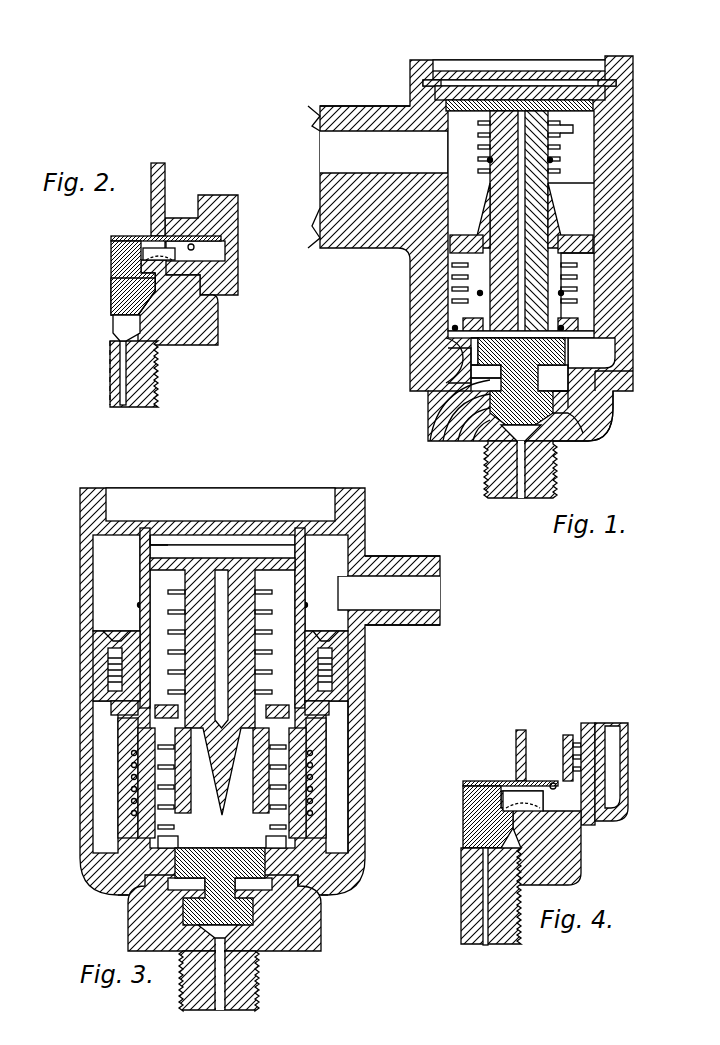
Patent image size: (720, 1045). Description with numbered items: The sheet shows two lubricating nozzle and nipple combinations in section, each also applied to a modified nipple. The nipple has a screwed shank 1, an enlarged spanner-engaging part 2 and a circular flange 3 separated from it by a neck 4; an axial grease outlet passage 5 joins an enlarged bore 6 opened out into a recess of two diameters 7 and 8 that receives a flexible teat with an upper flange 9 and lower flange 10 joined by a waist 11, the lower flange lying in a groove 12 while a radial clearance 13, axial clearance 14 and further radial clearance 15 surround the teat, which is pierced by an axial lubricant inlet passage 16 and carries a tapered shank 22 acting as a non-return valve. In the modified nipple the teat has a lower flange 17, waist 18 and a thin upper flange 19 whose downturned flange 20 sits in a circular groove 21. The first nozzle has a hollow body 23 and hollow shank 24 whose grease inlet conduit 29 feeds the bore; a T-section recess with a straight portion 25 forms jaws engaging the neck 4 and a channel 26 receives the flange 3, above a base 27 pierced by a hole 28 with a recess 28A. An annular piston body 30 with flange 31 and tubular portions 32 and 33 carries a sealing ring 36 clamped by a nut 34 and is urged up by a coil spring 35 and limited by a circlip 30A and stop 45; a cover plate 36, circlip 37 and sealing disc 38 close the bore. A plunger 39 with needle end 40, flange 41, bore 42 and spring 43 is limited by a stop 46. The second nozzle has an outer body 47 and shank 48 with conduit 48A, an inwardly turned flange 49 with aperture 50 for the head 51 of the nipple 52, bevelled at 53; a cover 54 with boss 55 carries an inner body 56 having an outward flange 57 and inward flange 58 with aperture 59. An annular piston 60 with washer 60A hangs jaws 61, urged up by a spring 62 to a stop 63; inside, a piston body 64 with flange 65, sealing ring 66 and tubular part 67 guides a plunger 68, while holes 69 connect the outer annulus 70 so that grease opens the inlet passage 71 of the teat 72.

In FIG. 1, the shank 1 is at (540, 462).
In FIG. 1, the intermediate or spanner-engaging part 2 is at (540, 400).
In FIG. 1, the circular flange 3 is at (585, 357).
In FIG. 2, the circular flange 3 is at (207, 253).
In FIG. 4, the circular flange 3 is at (563, 790).
In FIG. 1, the neck 4 is at (590, 373).
In FIG. 1, the axial grease outlet passage 5 is at (514, 487).
In FIG. 1, the enlarged bore 6 is at (530, 412).
In FIG. 2, the enlarged bore 6 is at (140, 343).
In FIG. 1, the larger diameter recess part 7 is at (472, 338).
In FIG. 2, the larger diameter recess part 7 is at (183, 245).
In FIG. 1, the smaller diameter recess part 8 is at (470, 385).
In FIG. 1, the upper flange 9 is at (473, 347).
In FIG. 1, the lower flange 10 is at (548, 397).
In FIG. 1, the waist 11 is at (470, 376).
In FIG. 1, the groove 12 is at (473, 400).
In FIG. 1, the radial clearance 13 is at (570, 347).
In FIG. 1, the axial clearance 14 is at (480, 370).
In FIG. 1, the radial clearance 15 is at (553, 362).
In FIG. 1, the axial lubricant inlet passage 16 is at (553, 428).
In FIG. 2, the axial lubricant inlet passage 16 is at (115, 290).
In FIG. 2, the lower flange 17 is at (150, 283).
In FIG. 2, the waist 18 is at (117, 257).
In FIG. 2, the upper flange 19 is at (125, 228).
In FIG. 4, the upper flange 19 is at (503, 772).
In FIG. 2, the circumferential downwardly-turned flange 20 is at (182, 238).
In FIG. 4, the circumferential downwardly-turned flange 20 is at (542, 773).
In FIG. 2, the circular groove 21 is at (186, 240).
In FIG. 4, the circular groove 21 is at (548, 777).
In FIG. 1, the tapered shank 22 is at (507, 445).
In FIG. 2, the tapered shank 22 is at (107, 310).
In FIG. 1, the hollow body 23 is at (612, 257).
In FIG. 1, the hollow shank 24 is at (345, 110).
In FIG. 1, the lower straight parallel portion 25 is at (470, 365).
In FIG. 1, the channel 26 is at (463, 340).
In FIG. 1, the base 27 is at (447, 330).
In FIG. 1, the hole 28 is at (447, 320).
In FIG. 1, the recess 28A is at (565, 320).
In FIG. 1, the grease inlet conduit 29 is at (340, 151).
In FIG. 1, the central metal body 30 is at (553, 233).
In FIG. 1, the circlip 30A is at (418, 347).
In FIG. 1, the flange 31 is at (556, 263).
In FIG. 1, the upper tubular portion 32 is at (542, 183).
In FIG. 1, the lower tubular portion 33 is at (470, 275).
In FIG. 1, the nut 34 is at (463, 215).
In FIG. 1, the coil spring 35 is at (553, 285).
In FIG. 1, the flexible sealing ring 36 is at (513, 90).
In FIG. 1, the circlip 37 is at (600, 53).
In FIG. 1, the flexible sealing ring or disc 38 is at (453, 95).
In FIG. 1, the plunger 39 is at (533, 170).
In FIG. 1, the needle or injector end 40 is at (545, 300).
In FIG. 1, the external flange 41 is at (550, 117).
In FIG. 1, the central straight-through bore 42 is at (512, 172).
In FIG. 1, the coil spring 43 is at (563, 140).
In FIG. 1, the stop 45 is at (445, 295).
In FIG. 1, the stop 46 is at (542, 152).
In FIG. 3, the outer hollow body 47 is at (345, 690).
In FIG. 3, the hollow shank 48 is at (370, 550).
In FIG. 3, the outlet bore 48A is at (410, 585).
In FIG. 3, the inwardly turned flange 49 is at (340, 882).
In FIG. 3, the aperture 50 is at (305, 890).
In FIG. 3, the head 51 is at (300, 868).
In FIG. 3, the nipple 52 is at (275, 940).
In FIG. 3, the bevel 53 is at (80, 853).
In FIG. 3, the cover 54 is at (202, 490).
In FIG. 3, the central boss 55 is at (147, 527).
In FIG. 3, the inner body or sleeve 56 is at (135, 608).
In FIG. 3, the outwardly turned flange 57 is at (272, 835).
In FIG. 3, the inwardly turned flange 58 is at (252, 800).
In FIG. 3, the central aperture 59 is at (150, 832).
In FIG. 3, the annular piston 60 is at (332, 655).
In FIG. 3, the annular sealing washer 60A is at (96, 650).
In FIG. 3, the jaws 61 is at (118, 748).
In FIG. 3, the coil spring 62 is at (123, 773).
In FIG. 3, the stop 63 is at (130, 592).
In FIG. 3, the piston body 64 is at (140, 704).
In FIG. 3, the flange 65 is at (150, 718).
In FIG. 3, the sealing ring 66 is at (282, 712).
In FIG. 3, the tubular part 67 is at (270, 768).
In FIG. 3, the plunger 68 is at (237, 555).
In FIG. 3, the holes 69 is at (132, 597).
In FIG. 3, the outer annulus 70 is at (328, 612).
In FIG. 3, the inlet passage 71 is at (128, 887).
In FIG. 3, the teat 72 is at (200, 840).